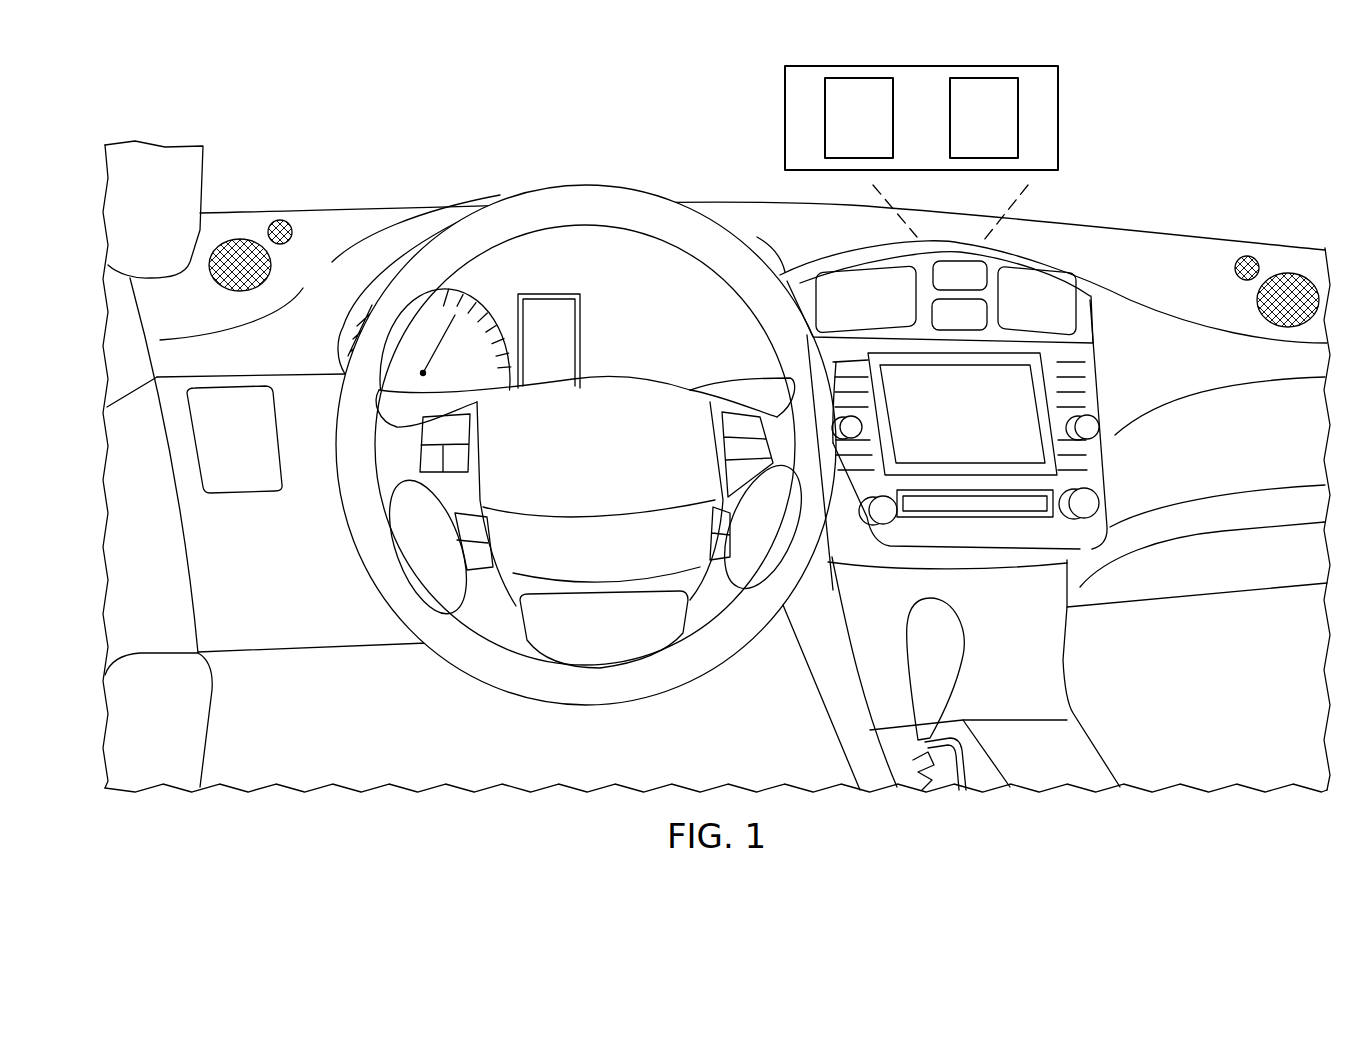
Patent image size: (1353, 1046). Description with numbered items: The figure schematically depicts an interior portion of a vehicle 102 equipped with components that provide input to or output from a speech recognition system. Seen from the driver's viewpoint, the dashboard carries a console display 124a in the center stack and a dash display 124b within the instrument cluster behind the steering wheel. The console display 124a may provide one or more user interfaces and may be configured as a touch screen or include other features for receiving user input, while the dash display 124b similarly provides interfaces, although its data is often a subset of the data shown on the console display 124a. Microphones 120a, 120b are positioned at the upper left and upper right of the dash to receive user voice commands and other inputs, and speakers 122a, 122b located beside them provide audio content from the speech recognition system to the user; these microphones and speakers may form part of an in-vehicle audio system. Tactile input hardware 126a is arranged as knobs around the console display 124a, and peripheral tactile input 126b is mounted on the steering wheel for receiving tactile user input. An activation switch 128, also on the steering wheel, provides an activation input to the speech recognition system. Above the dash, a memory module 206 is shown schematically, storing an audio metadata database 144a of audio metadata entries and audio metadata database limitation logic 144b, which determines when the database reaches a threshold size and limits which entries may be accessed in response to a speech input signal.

The vehicle 102 is at (370, 113).
The microphone 120a is at (283, 220).
The microphone 120b is at (1245, 256).
The speaker 122a is at (240, 239).
The speaker 122b is at (1294, 273).
The console display 124a is at (1030, 387).
The dash display 124b is at (570, 313).
The tactile input hardware 126a is at (862, 427).
The peripheral tactile input 126b is at (457, 428).
The activation switch 128 is at (728, 428).
The audio metadata database 144a is at (859, 118).
The audio metadata database limitation logic 144b is at (984, 118).
The memory module 206 is at (958, 149).